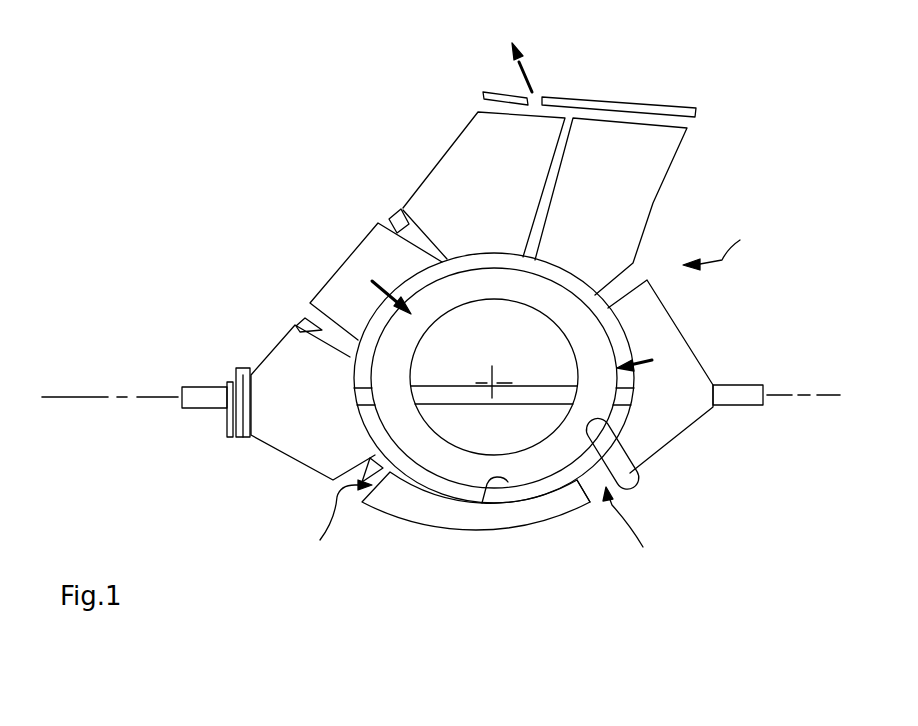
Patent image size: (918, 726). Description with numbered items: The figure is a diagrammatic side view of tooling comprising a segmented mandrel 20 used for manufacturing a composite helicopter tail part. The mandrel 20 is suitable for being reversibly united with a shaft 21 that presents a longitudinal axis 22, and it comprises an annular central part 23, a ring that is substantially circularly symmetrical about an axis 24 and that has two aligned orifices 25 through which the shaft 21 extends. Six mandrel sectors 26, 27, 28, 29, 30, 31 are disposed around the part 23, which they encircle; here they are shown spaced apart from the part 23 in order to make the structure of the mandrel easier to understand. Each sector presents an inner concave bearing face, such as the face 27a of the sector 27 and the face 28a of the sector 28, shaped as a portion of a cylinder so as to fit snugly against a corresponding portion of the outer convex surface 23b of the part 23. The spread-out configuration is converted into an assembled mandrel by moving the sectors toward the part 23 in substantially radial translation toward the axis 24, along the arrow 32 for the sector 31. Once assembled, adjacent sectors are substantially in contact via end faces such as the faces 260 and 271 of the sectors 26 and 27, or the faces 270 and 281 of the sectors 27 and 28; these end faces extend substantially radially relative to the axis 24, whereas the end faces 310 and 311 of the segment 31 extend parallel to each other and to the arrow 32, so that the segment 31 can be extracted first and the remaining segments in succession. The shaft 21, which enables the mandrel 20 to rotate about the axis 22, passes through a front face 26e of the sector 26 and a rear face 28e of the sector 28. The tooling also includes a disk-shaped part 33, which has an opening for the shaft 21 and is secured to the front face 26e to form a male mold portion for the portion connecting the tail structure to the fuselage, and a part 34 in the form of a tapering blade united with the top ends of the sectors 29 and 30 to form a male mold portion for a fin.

The mandrel 20 is at (743, 248).
The shaft 21 is at (200, 408).
The longitudinal axis 22 is at (82, 397).
The annular central part 23 is at (492, 292).
The outer convex surface 23b is at (677, 333).
The axis 24 is at (503, 382).
The orifices 25 is at (418, 357).
The mandrel sector 26 is at (293, 460).
The front face 26e is at (240, 368).
The mandrel sector 27 is at (413, 523).
The inner concave bearing face 27a is at (508, 482).
The mandrel sector 28 is at (683, 440).
The inner concave bearing face 28a is at (623, 472).
The rear face 28e is at (713, 413).
The mandrel sector 29 is at (655, 203).
The mandrel sector 30 is at (458, 137).
The mandrel sector 31 is at (328, 280).
The arrow 32 is at (375, 283).
The disk-shaped part 33 is at (233, 438).
The tapering blade part 34 is at (600, 101).
The end face 260 is at (383, 483).
The end face 270 is at (597, 482).
The end face 271 is at (321, 524).
The end face 281 is at (643, 535).
The end face 310 is at (296, 320).
The end face 311 is at (403, 232).